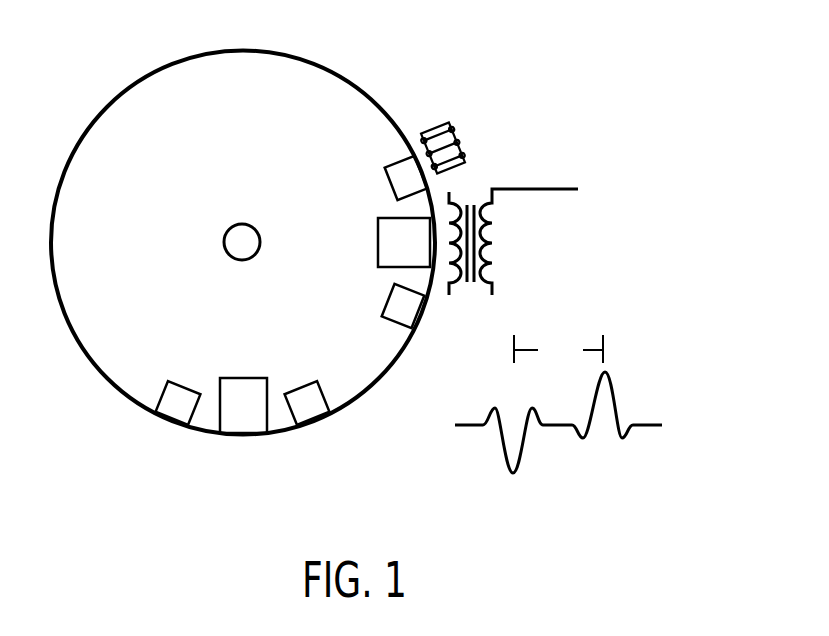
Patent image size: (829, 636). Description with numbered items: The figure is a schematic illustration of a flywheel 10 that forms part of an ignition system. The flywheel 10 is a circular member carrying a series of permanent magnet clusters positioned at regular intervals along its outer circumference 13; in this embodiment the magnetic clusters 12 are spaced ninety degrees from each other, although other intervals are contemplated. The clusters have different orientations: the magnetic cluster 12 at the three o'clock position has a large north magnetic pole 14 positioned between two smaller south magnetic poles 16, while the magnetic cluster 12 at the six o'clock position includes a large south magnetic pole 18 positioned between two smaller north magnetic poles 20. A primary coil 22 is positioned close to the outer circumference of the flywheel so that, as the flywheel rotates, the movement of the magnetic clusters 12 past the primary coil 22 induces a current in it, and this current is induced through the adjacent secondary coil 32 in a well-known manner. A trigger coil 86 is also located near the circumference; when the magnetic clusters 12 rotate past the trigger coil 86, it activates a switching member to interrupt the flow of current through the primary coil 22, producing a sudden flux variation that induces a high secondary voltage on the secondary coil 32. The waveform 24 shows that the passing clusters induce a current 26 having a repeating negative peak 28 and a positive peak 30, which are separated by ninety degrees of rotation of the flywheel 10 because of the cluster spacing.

The flywheel 10 is at (388, 84).
The magnetic clusters 12 is at (279, 464).
The outer circumference 13 is at (280, 52).
The north magnetic pole 14 is at (378, 242).
The south magnetic poles 16 is at (378, 188).
The south magnetic pole 18 is at (245, 378).
The north magnetic poles 20 is at (160, 400).
The primary coil 22 is at (513, 213).
The waveform 24 is at (657, 395).
The current 26 is at (648, 427).
The negative peak 28 is at (518, 467).
The positive peak 30 is at (608, 383).
The secondary coil 32 is at (492, 223).
The trigger coil 86 is at (433, 118).